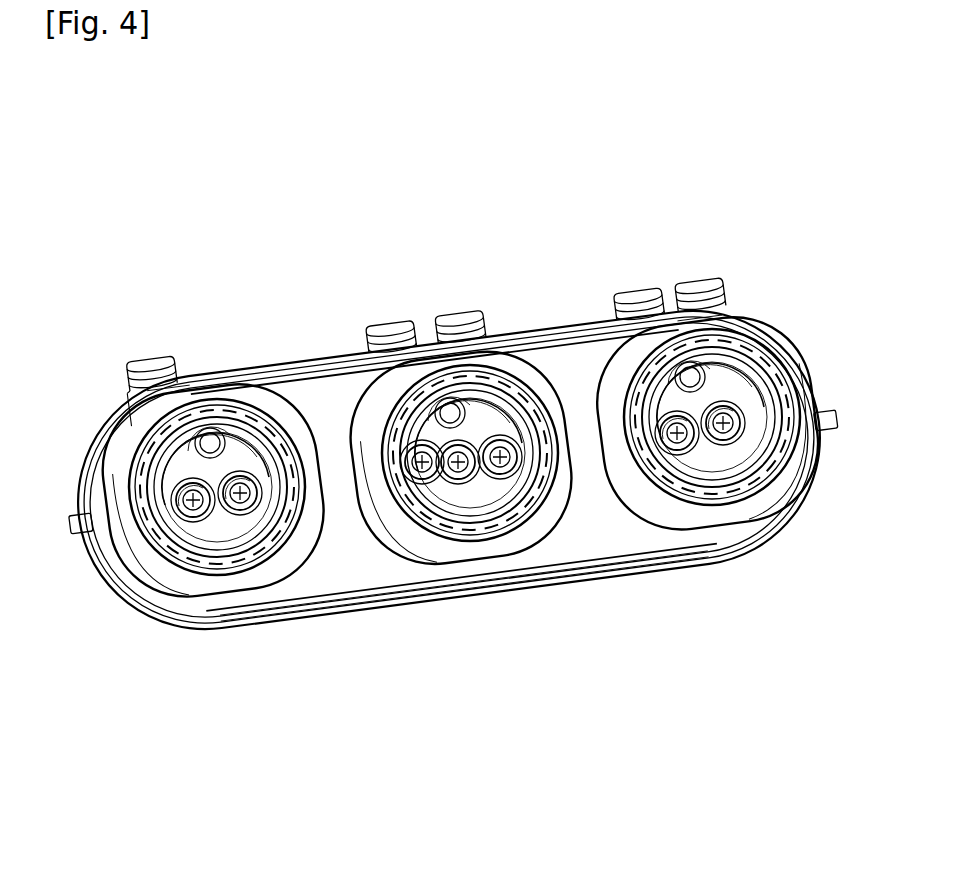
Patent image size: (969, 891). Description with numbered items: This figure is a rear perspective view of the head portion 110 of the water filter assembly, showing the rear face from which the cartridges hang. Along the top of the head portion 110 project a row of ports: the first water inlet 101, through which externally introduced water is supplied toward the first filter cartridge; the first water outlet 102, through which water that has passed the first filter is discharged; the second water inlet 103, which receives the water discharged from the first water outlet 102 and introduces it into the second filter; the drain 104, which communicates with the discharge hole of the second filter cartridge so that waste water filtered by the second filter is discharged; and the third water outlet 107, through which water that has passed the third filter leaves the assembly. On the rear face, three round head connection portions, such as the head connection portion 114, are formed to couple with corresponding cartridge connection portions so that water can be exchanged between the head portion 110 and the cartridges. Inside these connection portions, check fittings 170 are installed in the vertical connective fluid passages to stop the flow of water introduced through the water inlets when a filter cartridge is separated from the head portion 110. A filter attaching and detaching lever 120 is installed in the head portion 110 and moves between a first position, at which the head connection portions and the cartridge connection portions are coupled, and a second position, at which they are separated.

The first water inlet 101 is at (693, 280).
The first water outlet 102 is at (632, 290).
The second water inlet 103 is at (455, 312).
The drain 104 is at (388, 322).
The third water outlet 107 is at (152, 355).
The head portion 110 is at (621, 577).
The head connection portion 114 is at (259, 362).
The filter attaching and detaching lever 120 is at (172, 575).
The check fitting 170 is at (743, 425).